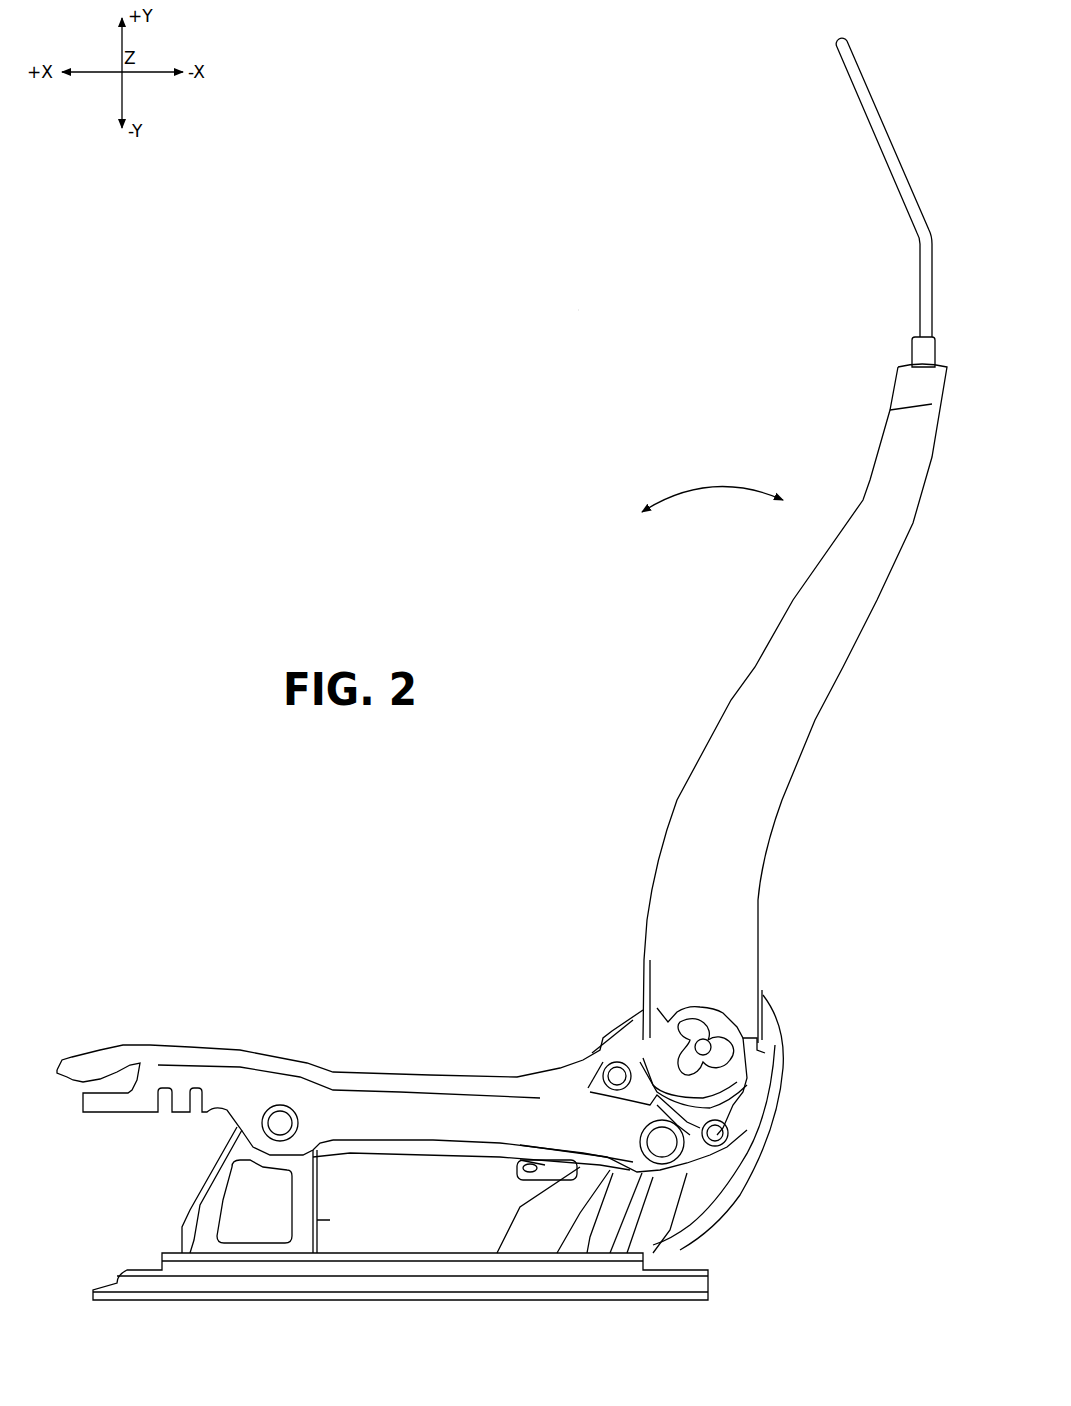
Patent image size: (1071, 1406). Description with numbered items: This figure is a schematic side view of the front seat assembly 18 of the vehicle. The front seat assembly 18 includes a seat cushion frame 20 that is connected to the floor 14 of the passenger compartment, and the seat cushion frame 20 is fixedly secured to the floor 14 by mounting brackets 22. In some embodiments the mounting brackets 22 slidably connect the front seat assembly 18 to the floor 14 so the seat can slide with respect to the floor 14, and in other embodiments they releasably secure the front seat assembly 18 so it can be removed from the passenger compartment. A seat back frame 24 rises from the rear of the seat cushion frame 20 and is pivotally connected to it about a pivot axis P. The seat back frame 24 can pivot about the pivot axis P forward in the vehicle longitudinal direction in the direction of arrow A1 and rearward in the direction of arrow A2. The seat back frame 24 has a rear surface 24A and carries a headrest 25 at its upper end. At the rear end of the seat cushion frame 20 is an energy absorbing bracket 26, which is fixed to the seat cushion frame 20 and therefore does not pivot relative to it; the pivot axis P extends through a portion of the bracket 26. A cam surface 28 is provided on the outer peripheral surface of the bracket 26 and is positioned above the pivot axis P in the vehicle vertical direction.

The floor 14 is at (147, 1258).
The front seat assembly 18 is at (578, 310).
The seat cushion frame 20 is at (175, 1032).
The mounting brackets 22 is at (520, 1225).
The seat back frame 24 is at (740, 625).
The rear surface 24A is at (813, 713).
The headrest 25 is at (863, 134).
The energy absorbing bracket 26 is at (657, 1013).
The cam surface 28 is at (737, 1000).
The pivot axis P is at (703, 1050).
The arrow A1 is at (697, 508).
The arrow A2 is at (800, 500).